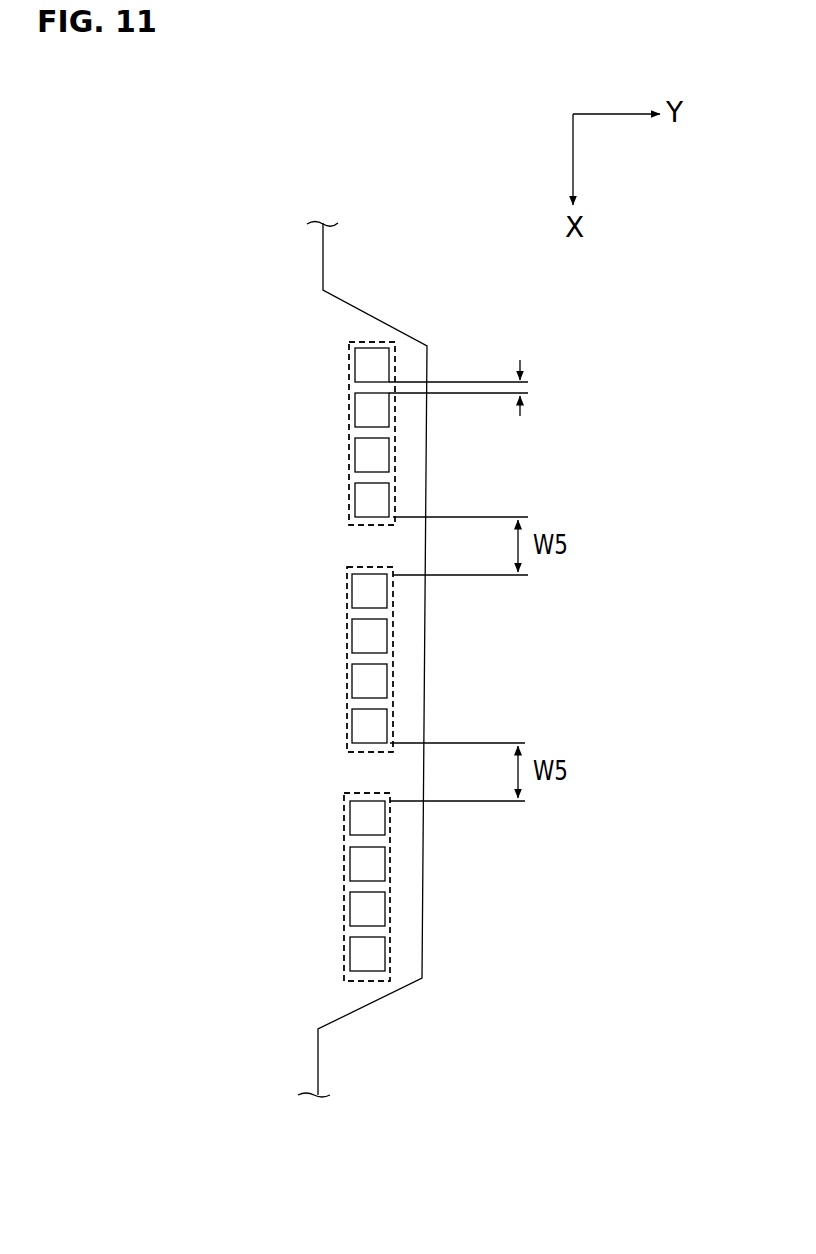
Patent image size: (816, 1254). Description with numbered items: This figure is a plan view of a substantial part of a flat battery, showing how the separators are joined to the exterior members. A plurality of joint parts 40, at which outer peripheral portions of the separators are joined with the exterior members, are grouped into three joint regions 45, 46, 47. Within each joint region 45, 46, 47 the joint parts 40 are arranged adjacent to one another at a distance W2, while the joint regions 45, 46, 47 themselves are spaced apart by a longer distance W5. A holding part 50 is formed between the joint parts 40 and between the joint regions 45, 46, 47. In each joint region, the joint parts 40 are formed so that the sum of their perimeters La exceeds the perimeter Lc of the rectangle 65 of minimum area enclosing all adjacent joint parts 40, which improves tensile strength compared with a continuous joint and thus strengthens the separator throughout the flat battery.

The joint part 40 is at (356, 353).
The joint region 45 is at (345, 335).
The joint region 46 is at (344, 564).
The joint region 47 is at (341, 791).
The holding part 50 is at (355, 388).
The rectangle of minimum area 65 is at (395, 456).